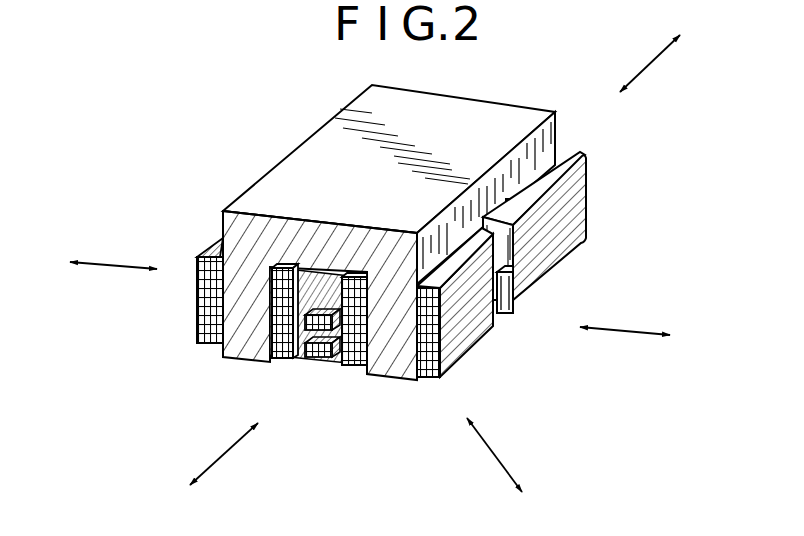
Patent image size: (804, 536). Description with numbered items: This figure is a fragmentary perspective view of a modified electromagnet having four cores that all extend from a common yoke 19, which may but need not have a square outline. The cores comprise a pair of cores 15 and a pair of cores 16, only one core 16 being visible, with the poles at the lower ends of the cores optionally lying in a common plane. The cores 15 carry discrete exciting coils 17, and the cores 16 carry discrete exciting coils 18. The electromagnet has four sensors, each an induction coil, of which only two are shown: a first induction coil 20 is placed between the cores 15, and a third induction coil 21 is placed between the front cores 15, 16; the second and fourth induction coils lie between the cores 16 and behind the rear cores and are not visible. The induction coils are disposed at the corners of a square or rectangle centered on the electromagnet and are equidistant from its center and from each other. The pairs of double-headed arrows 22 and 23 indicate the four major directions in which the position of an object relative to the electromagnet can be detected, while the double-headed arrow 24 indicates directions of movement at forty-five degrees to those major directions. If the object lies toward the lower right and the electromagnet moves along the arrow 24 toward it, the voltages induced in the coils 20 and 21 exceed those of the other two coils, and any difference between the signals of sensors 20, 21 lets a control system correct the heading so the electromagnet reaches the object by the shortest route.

The cores 15 is at (543, 160).
The cores 16 is at (248, 352).
The exciting coils 17 is at (428, 375).
The exciting coils 18 is at (203, 307).
The yoke 19 is at (236, 226).
The first induction coil 20 is at (508, 302).
The third induction coil 21 is at (323, 360).
The double-headed arrows 22 is at (657, 58).
The double-headed arrows 23 is at (110, 267).
The double-headed arrow 24 is at (487, 448).